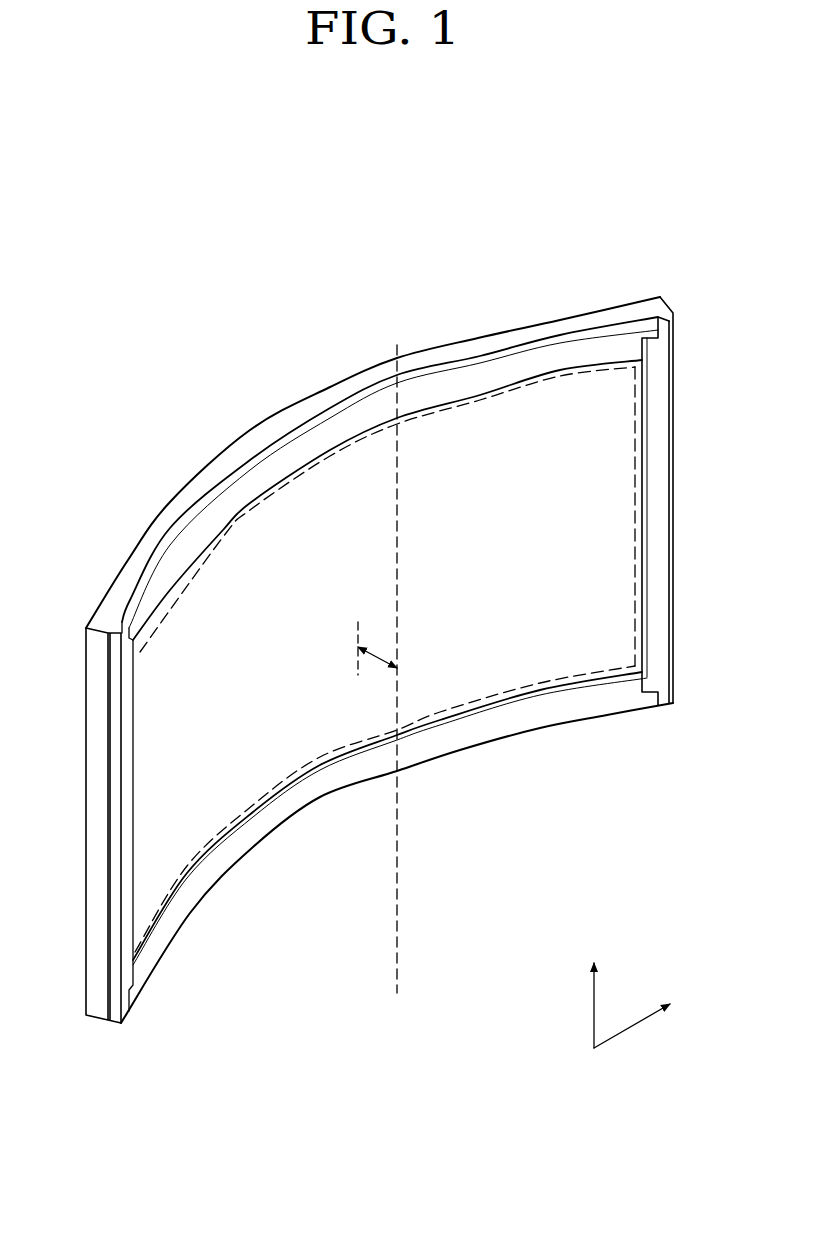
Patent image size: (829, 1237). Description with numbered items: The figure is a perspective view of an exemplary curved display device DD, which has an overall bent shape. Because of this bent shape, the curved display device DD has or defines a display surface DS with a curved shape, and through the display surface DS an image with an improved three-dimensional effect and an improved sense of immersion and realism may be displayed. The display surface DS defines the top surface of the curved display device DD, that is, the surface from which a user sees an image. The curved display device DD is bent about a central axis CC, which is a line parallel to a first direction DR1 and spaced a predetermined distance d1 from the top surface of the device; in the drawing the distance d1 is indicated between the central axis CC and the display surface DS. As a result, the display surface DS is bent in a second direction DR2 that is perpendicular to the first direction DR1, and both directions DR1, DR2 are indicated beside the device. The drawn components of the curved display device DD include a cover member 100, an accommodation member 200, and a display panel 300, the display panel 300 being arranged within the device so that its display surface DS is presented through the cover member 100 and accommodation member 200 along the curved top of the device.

The curved display device DD is at (593, 220).
The cover member 100 is at (663, 470).
The accommodation member 200 is at (480, 342).
The display panel 300 is at (584, 525).
The display surface DS is at (638, 600).
The central axis CC is at (397, 913).
The predetermined distance d1 is at (377, 648).
The first direction DR1 is at (593, 992).
The second direction DR2 is at (653, 1016).